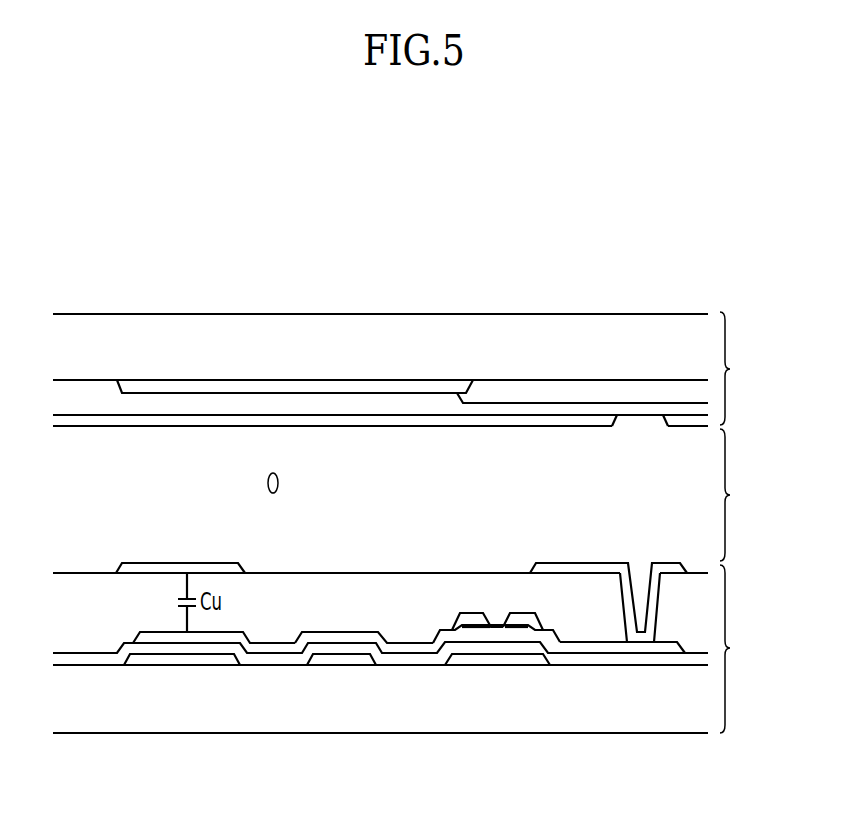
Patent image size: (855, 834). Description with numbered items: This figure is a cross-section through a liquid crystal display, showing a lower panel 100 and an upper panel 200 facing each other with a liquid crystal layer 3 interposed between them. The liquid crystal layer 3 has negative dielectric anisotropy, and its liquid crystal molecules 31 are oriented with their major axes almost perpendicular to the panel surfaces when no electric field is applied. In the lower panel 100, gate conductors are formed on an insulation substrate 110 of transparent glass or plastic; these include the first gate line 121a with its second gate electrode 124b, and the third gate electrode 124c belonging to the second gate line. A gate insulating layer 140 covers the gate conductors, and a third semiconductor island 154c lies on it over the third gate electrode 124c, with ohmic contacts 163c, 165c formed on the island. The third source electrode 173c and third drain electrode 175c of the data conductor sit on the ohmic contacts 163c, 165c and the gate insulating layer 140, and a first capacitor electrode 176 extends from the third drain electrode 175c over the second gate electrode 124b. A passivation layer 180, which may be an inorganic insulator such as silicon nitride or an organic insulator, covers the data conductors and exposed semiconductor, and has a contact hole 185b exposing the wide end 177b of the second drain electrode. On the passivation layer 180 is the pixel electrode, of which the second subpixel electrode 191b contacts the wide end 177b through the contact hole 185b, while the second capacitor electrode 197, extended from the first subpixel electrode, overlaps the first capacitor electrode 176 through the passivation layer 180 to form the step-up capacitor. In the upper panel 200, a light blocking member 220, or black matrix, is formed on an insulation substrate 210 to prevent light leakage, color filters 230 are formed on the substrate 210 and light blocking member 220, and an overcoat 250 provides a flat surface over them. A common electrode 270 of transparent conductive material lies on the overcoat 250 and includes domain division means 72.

The insulation substrate 210 is at (493, 327).
The light blocking member 220 is at (382, 385).
The color filters 230 is at (627, 390).
The overcoat 250 is at (252, 405).
The common electrode 270 is at (438, 418).
The domain division means 72 is at (617, 425).
The upper panel 200 is at (743, 368).
The liquid crystal layer 3 is at (734, 495).
The lower panel 100 is at (743, 649).
The liquid crystal molecules 31 is at (278, 483).
The insulation substrate 110 is at (90, 715).
The second gate electrode 124b is at (170, 660).
The first gate line 121a is at (343, 660).
The third gate electrode 124c is at (507, 658).
The gate insulating layer 140 is at (278, 659).
The first capacitor electrode 176 is at (198, 637).
The third semiconductor island 154c is at (488, 637).
The ohmic contact 165c is at (475, 632).
The ohmic contact 163c is at (522, 632).
The third drain electrode 175c is at (470, 615).
The third source electrode 173c is at (522, 615).
The wide end 177b is at (642, 647).
The passivation layer 180 is at (330, 578).
The contact hole 185b is at (625, 593).
The second subpixel electrode 191b is at (568, 568).
The second capacitor electrode 197 is at (173, 570).